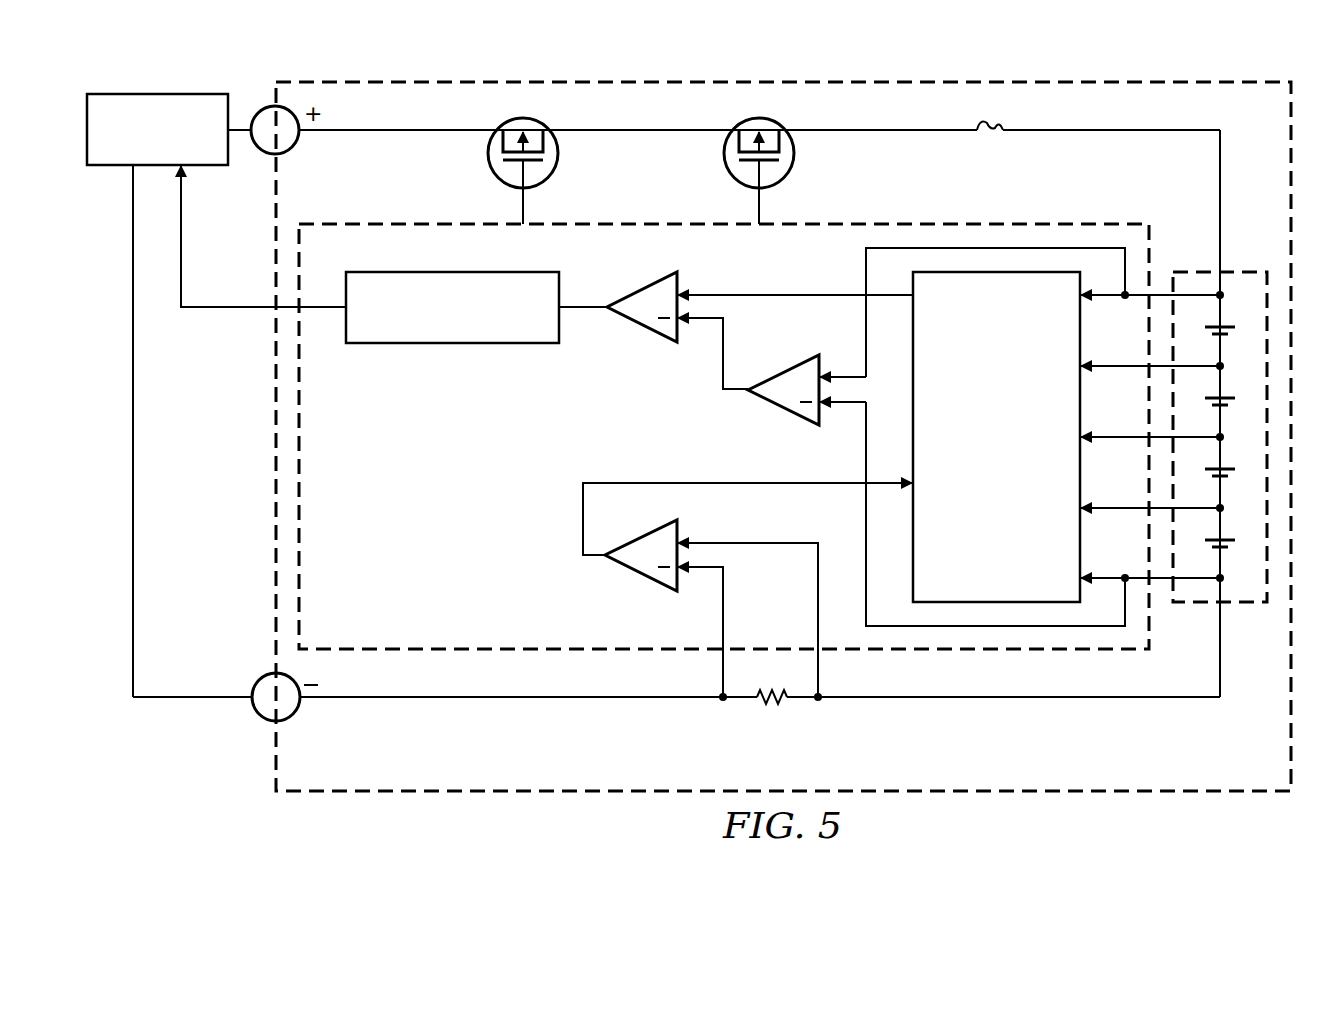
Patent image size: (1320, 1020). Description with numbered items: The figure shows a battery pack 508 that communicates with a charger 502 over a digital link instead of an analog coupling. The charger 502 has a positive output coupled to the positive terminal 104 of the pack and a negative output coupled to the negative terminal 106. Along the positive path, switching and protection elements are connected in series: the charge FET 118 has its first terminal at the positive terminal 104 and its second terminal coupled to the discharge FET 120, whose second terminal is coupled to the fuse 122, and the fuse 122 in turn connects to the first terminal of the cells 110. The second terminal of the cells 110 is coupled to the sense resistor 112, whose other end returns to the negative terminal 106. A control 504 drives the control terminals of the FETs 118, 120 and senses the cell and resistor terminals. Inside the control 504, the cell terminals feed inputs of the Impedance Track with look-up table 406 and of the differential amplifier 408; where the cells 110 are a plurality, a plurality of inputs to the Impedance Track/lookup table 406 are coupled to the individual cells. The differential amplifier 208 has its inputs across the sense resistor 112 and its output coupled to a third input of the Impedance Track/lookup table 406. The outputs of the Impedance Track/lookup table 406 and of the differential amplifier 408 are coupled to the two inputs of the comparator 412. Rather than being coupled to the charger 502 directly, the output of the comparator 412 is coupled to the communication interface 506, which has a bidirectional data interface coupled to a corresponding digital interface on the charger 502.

The charger 502 is at (156, 94).
The positive terminal 104 is at (293, 147).
The negative terminal 106 is at (256, 714).
The charge FET 118 is at (559, 153).
The discharge FET 120 is at (795, 153).
The fuse 122 is at (995, 135).
The cells 110 is at (1242, 272).
The Impedance Track with look-up table 406 is at (1017, 488).
The comparator 412 is at (640, 326).
The differential amplifier 408 is at (782, 410).
The differential amplifier 208 is at (640, 575).
The sense resistor 112 is at (768, 702).
The communication interface 506 is at (452, 343).
The control 504 is at (462, 562).
The battery pack 508 is at (1063, 758).